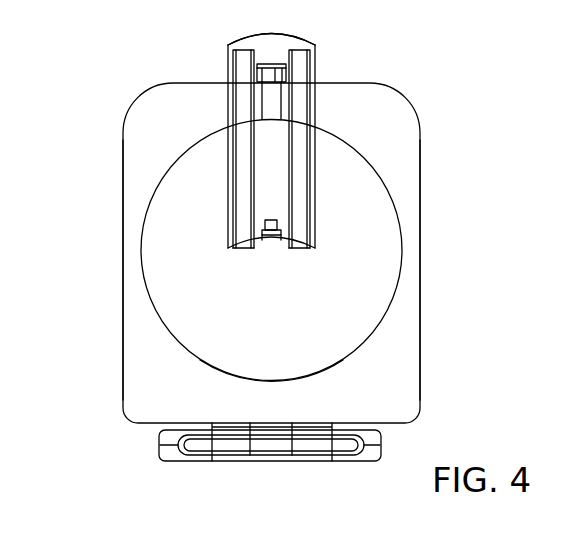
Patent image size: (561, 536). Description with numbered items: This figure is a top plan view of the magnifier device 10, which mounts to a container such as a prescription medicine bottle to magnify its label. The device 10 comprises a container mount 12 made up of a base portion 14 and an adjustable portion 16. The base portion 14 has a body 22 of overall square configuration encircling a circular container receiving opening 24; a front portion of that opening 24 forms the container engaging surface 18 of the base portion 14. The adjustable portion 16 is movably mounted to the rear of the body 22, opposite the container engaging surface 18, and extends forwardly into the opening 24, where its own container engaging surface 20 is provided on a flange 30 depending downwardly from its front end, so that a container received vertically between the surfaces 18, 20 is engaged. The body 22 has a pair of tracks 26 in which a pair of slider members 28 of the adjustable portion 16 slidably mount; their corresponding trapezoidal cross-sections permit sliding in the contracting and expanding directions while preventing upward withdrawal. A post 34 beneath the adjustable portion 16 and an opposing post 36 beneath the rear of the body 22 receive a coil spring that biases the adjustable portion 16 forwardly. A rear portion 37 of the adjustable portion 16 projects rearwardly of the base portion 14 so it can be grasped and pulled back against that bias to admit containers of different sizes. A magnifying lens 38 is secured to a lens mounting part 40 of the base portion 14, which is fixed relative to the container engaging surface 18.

The magnifier device 10 is at (446, 96).
The container mount 12 is at (114, 107).
The base portion 14 is at (413, 280).
The adjustable portion 16 is at (292, 42).
The container engaging surface 18 is at (240, 377).
The container engaging surface 20 is at (242, 248).
The body 22 is at (123, 385).
The container receiving opening 24 is at (392, 250).
The tracks 26 is at (232, 222).
The slider members 28 is at (240, 103).
The flange 30 is at (300, 250).
The post 34 is at (268, 236).
The opposing post 36 is at (273, 93).
The rear portion 37 is at (227, 43).
The magnifying lens 38 is at (272, 462).
The lens mounting part 40 is at (332, 426).